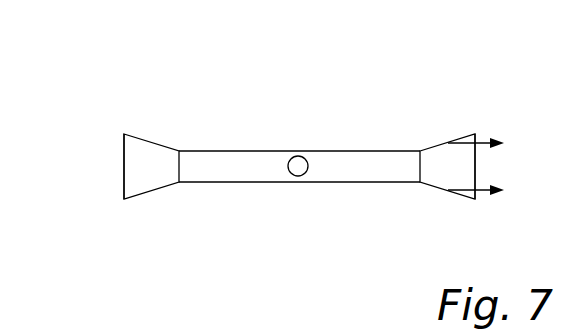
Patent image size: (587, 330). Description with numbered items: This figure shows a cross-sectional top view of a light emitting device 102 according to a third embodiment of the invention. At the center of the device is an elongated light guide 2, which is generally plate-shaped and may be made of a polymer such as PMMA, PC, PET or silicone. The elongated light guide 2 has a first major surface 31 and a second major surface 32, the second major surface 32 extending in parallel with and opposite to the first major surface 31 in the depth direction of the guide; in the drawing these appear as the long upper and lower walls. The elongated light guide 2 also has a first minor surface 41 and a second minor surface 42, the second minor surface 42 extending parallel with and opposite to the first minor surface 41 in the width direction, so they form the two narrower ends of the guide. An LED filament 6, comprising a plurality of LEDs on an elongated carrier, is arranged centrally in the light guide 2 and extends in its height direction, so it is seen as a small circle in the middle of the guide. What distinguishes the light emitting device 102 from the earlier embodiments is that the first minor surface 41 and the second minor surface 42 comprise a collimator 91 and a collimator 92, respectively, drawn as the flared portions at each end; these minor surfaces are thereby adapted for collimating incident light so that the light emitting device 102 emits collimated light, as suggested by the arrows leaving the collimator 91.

The light emitting device 102 is at (104, 93).
The elongated light guide 2 is at (245, 118).
The first major surface 31 is at (340, 150).
The second major surface 32 is at (383, 184).
The first minor surface 41 is at (418, 165).
The second minor surface 42 is at (181, 170).
The LED filament 6 is at (300, 170).
The collimator 91 is at (464, 165).
The collimator 92 is at (127, 170).